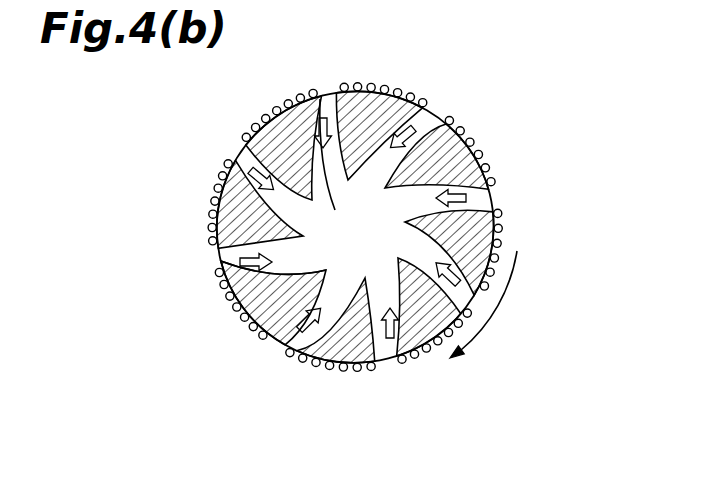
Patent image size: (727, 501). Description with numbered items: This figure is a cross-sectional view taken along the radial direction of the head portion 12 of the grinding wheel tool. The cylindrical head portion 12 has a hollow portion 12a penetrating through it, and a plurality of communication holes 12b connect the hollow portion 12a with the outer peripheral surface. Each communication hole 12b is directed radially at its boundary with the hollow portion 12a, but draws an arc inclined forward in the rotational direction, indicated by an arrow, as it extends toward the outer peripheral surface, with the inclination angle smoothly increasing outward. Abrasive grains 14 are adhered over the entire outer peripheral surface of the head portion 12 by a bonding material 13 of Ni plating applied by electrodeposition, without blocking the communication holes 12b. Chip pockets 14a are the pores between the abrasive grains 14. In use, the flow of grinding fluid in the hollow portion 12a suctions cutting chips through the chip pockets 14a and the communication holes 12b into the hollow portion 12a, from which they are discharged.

The head portion 12 is at (224, 135).
The hollow portion 12a is at (320, 99).
The communication holes 12b is at (221, 261).
The bonding material 13 is at (478, 148).
The abrasive grains 14 is at (457, 125).
The chip pockets 14a is at (500, 178).